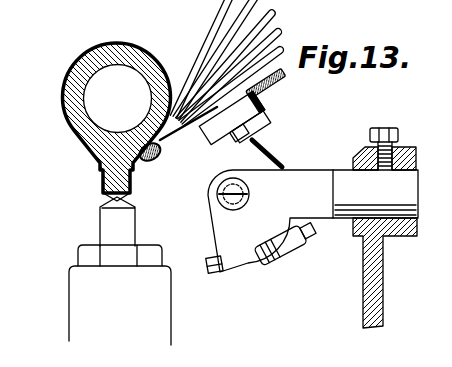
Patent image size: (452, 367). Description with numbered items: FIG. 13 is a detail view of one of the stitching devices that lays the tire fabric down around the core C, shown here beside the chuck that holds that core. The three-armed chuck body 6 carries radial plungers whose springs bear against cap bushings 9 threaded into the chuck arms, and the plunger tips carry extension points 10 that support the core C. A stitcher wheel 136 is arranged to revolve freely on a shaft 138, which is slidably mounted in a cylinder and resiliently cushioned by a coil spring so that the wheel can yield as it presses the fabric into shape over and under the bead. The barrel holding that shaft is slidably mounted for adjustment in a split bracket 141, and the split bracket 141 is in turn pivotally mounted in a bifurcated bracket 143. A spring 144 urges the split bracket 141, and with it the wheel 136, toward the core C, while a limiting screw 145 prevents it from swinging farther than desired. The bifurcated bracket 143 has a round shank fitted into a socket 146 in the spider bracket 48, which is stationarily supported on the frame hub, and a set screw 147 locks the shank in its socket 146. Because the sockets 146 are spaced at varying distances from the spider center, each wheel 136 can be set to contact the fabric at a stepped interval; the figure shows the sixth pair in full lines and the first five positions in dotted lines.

The core C is at (80, 133).
The chuck body 6 is at (77, 330).
The cap bushing 9 is at (88, 253).
The extension point 10 is at (107, 218).
The spider bracket 48 is at (363, 303).
The stitcher wheel 136 is at (262, 94).
The shaft 138 is at (253, 133).
The split bracket 141 is at (158, 146).
The bifurcated bracket 143 is at (314, 193).
The spring 144 is at (268, 260).
The limiting screw 145 is at (214, 273).
The socket 146 is at (354, 152).
The set screw 147 is at (386, 127).